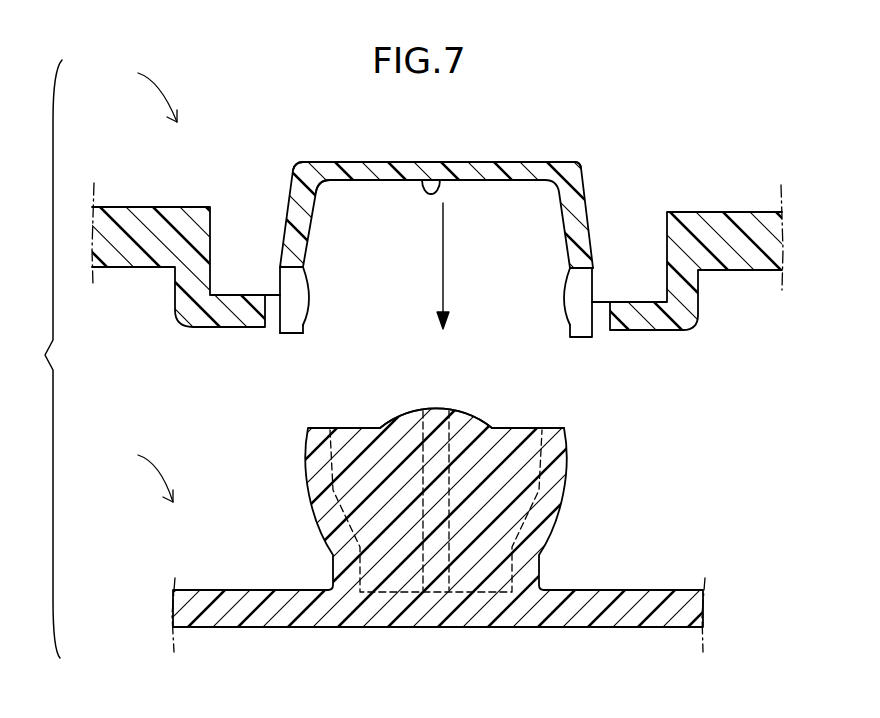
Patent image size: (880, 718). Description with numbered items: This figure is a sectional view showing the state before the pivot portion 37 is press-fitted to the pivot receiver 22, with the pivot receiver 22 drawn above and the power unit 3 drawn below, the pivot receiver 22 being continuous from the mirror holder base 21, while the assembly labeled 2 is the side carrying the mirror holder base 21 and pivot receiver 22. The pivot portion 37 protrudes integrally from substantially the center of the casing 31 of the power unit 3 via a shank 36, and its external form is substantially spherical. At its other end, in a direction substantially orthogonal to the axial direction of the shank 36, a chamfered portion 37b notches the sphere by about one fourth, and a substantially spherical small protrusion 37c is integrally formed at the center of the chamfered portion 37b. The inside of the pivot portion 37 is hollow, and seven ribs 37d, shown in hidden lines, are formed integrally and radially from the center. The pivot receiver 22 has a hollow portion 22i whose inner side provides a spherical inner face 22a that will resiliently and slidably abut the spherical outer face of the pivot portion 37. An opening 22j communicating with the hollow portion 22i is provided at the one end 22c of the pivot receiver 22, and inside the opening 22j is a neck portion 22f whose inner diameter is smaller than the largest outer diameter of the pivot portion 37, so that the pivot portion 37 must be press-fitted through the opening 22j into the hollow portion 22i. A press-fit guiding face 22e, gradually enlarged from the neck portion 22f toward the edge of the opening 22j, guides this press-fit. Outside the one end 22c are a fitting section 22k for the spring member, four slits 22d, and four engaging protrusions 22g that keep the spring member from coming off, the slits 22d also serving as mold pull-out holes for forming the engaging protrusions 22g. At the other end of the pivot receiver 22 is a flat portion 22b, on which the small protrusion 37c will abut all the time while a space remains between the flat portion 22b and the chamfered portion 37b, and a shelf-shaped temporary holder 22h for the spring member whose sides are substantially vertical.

The first member 2 is at (146, 90).
The power unit 3 is at (145, 469).
The mirror holder base 21 is at (147, 207).
The pivot receiver 22 is at (315, 158).
The spherical inner face 22a is at (305, 222).
The flat portion 22b is at (437, 178).
The one end 22c is at (274, 291).
The slits 22d is at (294, 320).
The press-fit guiding face 22e is at (305, 318).
The neck portion 22f is at (570, 287).
The engaging protrusions 22g is at (592, 263).
The temporary holder 22h is at (295, 163).
The hollow portion 22i is at (487, 202).
The opening 22j is at (527, 332).
The fitting section 22k is at (598, 287).
The casing 31 is at (198, 618).
The shank 36 is at (381, 580).
The pivot portion 37 is at (304, 500).
The chamfered portion 37b is at (530, 429).
The small protrusion 37c is at (435, 409).
The ribs 37d is at (478, 595).